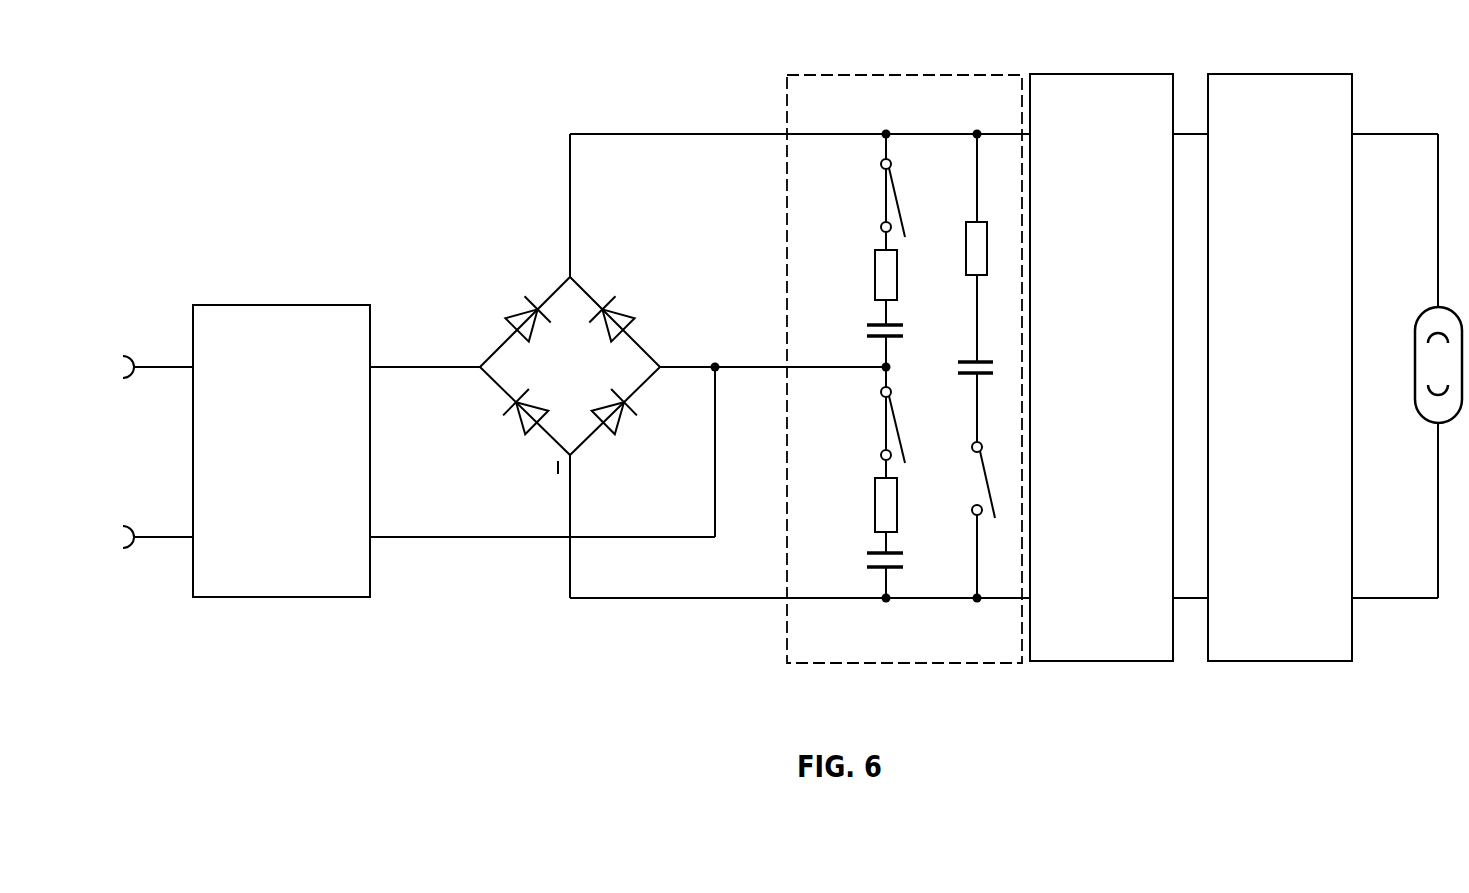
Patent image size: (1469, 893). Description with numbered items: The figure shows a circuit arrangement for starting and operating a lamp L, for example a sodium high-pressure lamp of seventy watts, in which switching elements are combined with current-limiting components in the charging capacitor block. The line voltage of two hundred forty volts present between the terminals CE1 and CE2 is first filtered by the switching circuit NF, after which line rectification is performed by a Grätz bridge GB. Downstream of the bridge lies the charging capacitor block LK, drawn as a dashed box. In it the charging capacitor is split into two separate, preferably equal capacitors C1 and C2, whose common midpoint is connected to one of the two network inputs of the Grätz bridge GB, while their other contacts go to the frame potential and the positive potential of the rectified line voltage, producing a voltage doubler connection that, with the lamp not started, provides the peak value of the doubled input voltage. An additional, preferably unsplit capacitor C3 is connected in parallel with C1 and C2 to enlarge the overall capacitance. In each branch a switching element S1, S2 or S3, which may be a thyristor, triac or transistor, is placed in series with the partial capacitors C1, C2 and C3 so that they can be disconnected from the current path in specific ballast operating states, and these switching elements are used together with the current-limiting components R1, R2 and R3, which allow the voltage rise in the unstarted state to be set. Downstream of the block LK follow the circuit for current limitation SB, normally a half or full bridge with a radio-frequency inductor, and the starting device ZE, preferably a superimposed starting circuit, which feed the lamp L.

The terminal CE1 is at (158, 356).
The terminal CE2 is at (158, 526).
The switching circuit NF is at (281, 451).
The Grätz bridge GB is at (567, 367).
The charging capacitor block LK is at (904, 369).
The switching element S1 is at (876, 198).
The switching element S2 is at (876, 425).
The switching element S3 is at (967, 480).
The resistor R1 is at (907, 275).
The resistor R2 is at (907, 505).
The current-limiting component R3 is at (960, 248).
The capacitor C1 is at (866, 314).
The capacitor C2 is at (866, 543).
The additional capacitor C3 is at (965, 352).
The current limitation circuit SB is at (1101, 367).
The starting device ZE is at (1280, 367).
The lamp L is at (1430, 365).